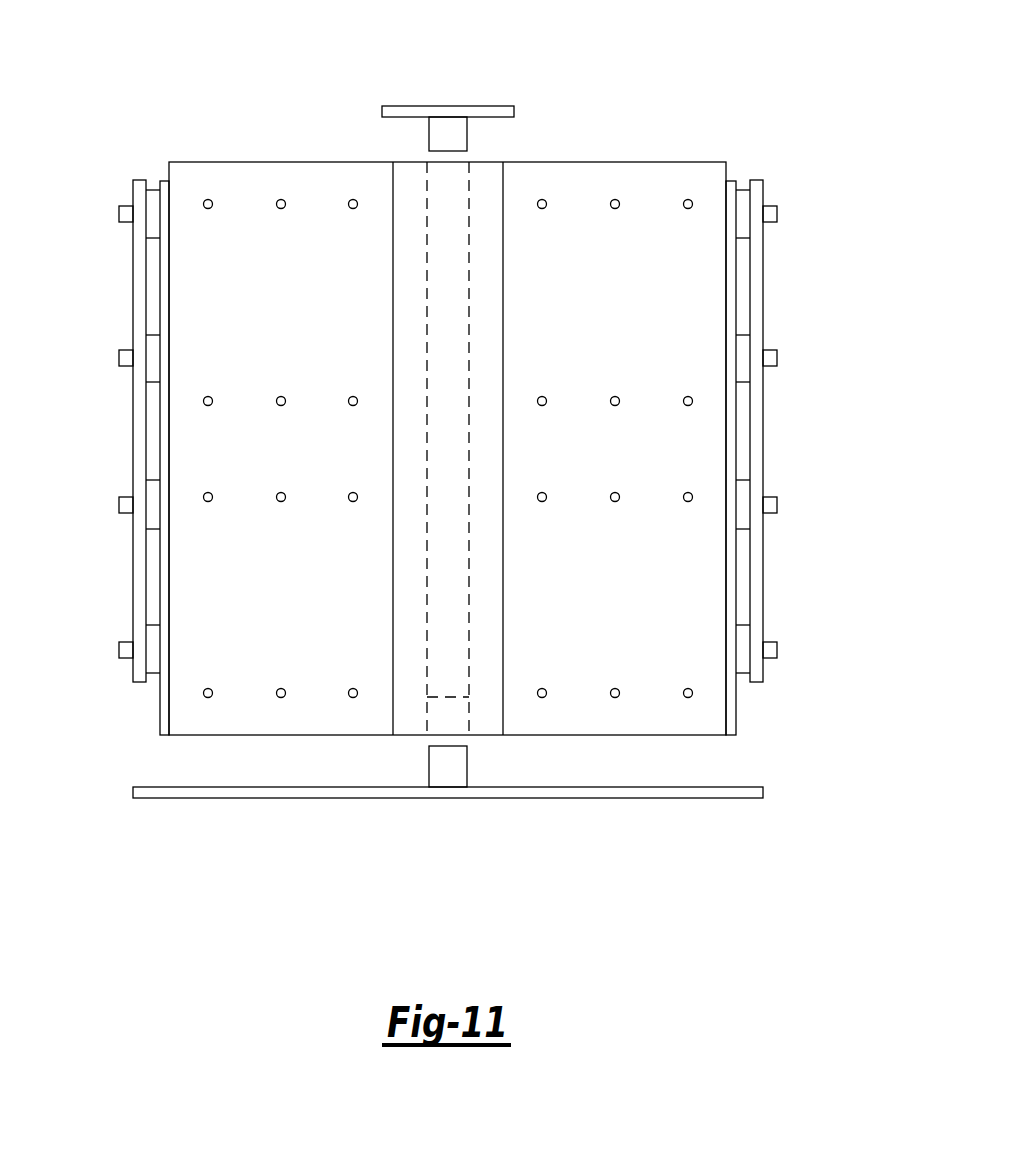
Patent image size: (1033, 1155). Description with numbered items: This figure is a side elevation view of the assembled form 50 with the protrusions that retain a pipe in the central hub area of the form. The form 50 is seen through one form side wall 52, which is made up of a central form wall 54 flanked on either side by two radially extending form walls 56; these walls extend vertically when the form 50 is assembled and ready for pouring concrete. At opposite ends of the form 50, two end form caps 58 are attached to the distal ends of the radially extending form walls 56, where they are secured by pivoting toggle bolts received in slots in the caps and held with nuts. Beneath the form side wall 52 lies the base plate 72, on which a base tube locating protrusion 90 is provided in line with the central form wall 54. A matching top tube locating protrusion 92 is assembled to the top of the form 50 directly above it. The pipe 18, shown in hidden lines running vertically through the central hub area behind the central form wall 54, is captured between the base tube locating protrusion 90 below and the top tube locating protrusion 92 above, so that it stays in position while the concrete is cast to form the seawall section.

The form 50 is at (802, 102).
The form side wall 52 is at (238, 173).
The central form wall 54 is at (483, 604).
The pipe 18 is at (470, 302).
The radially extending form wall 56 is at (296, 454).
The end form cap 58 is at (140, 424).
The top tube locating protrusion 92 is at (467, 138).
The base tube locating protrusion 90 is at (467, 768).
The base plate 72 is at (763, 792).